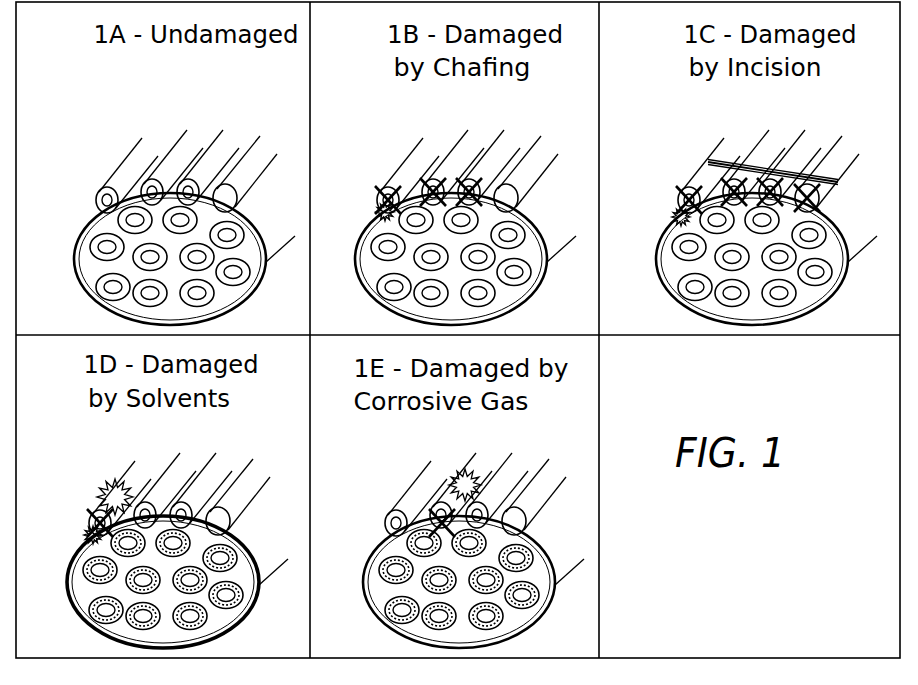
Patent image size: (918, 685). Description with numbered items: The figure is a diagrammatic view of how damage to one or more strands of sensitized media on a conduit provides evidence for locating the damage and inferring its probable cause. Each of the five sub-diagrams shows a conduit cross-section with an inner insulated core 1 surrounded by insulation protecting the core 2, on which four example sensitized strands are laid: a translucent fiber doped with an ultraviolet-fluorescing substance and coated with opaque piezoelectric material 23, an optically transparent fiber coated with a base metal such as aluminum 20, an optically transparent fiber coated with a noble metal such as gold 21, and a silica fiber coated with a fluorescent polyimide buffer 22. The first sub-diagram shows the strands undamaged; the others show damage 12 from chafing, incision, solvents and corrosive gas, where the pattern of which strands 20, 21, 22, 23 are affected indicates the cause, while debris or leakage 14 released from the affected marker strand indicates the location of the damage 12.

The inner insulated core 1 is at (107, 245).
The insulation protecting the core 2 is at (101, 214).
The damage 12 is at (165, 162).
The debris or leakage 14 is at (97, 206).
The strand of optically transparent fiber coated with base metal 20 is at (193, 138).
The strand of optically transparent fiber coated with a noble metal 21 is at (220, 152).
The strand of silica fiber coated with a fluorescent polyimide buffer 22 is at (265, 145).
The strand of translucent fiber doped with a fluorescing substance coated with opaqu 23 is at (148, 146).